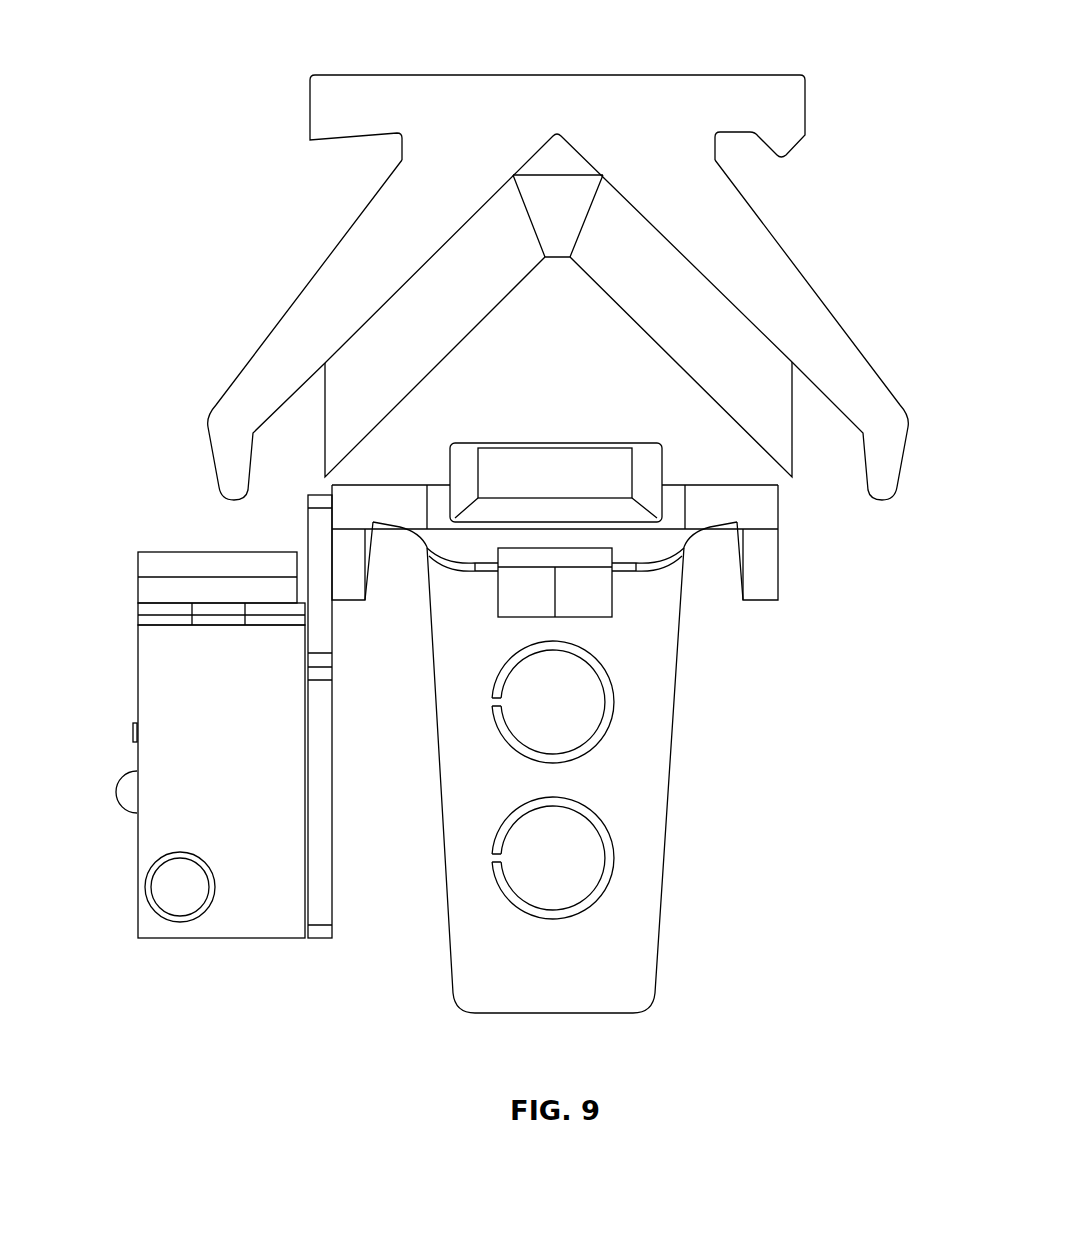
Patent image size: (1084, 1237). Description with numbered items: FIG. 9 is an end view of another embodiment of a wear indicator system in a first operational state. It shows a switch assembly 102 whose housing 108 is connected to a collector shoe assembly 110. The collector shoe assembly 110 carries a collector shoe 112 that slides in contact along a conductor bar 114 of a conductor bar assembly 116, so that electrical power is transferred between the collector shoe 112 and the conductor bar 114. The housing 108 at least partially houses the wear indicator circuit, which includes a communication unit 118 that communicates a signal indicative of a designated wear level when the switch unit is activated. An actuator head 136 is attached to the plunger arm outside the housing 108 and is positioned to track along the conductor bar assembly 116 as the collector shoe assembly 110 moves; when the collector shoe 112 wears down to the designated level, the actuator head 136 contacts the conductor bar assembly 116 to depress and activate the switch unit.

The switch assembly 102 is at (447, 749).
The housing 108 is at (207, 938).
The collector shoe assembly 110 is at (777, 722).
The collector shoe 112 is at (775, 423).
The conductor bar 114 is at (540, 97).
The conductor bar assembly 116 is at (580, 255).
The communication unit 118 is at (123, 778).
The actuator head 136 is at (167, 552).